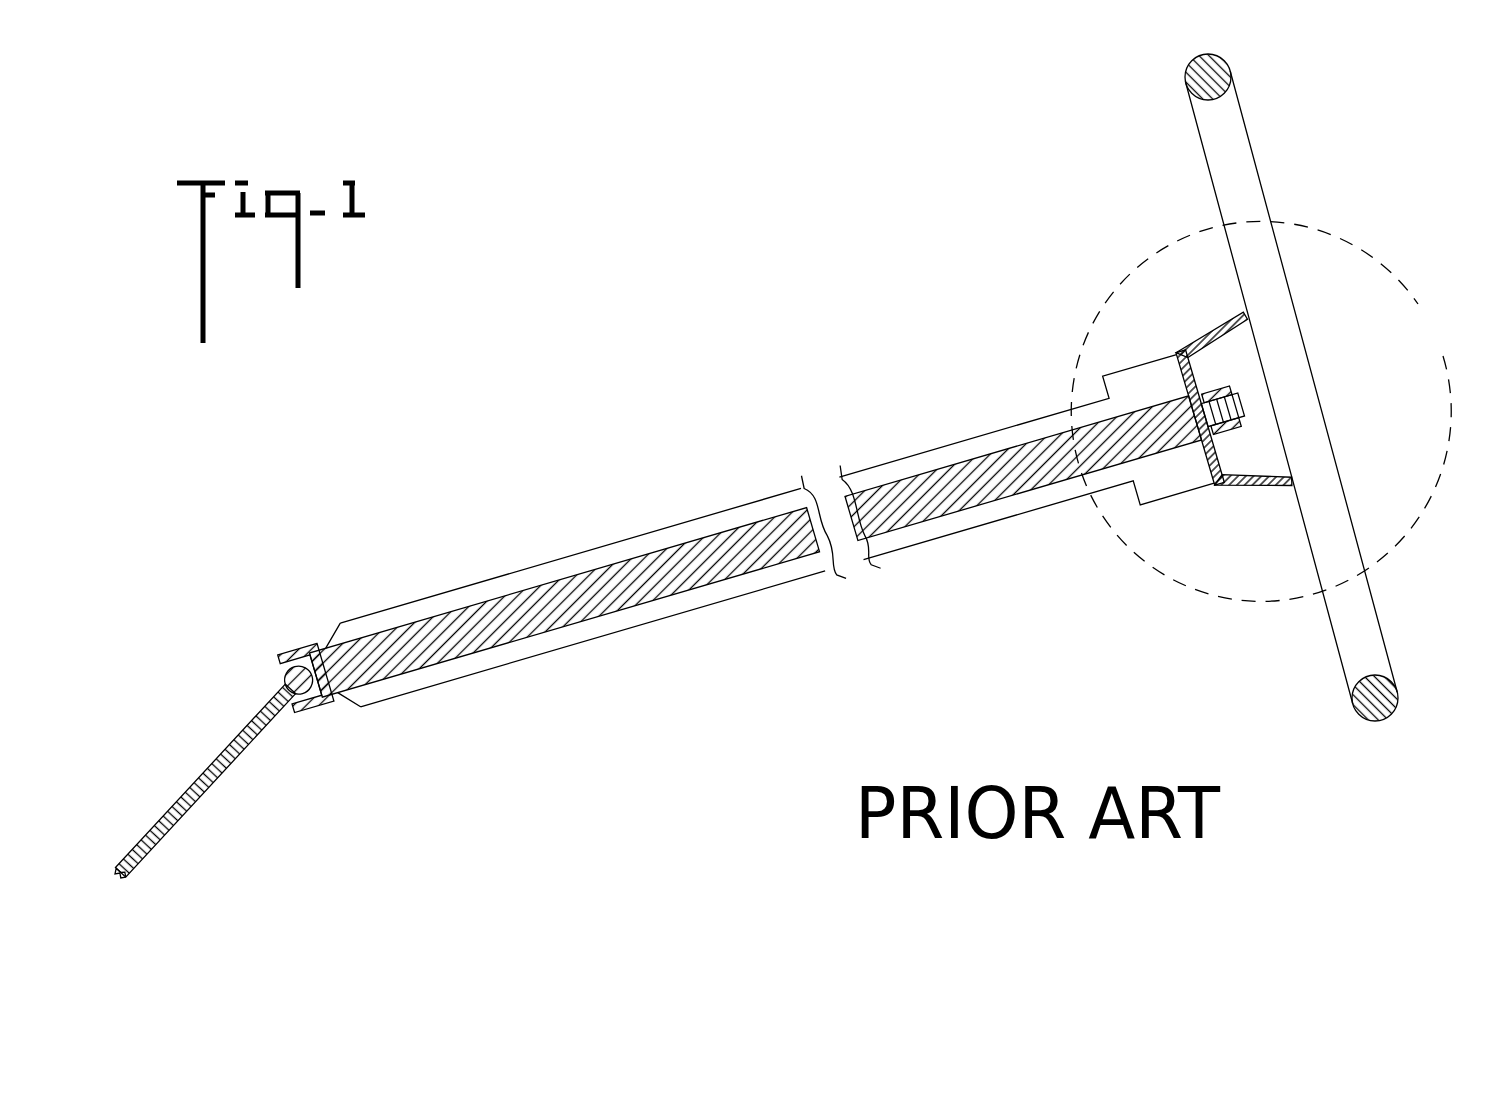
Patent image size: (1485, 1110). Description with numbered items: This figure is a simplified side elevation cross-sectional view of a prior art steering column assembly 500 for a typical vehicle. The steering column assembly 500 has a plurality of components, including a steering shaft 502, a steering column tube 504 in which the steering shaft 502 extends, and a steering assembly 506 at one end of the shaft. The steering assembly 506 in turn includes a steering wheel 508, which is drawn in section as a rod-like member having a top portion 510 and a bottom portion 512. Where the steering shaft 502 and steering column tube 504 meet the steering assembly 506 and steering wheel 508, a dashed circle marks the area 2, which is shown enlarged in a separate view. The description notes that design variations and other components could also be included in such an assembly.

The steering column assembly 500 is at (699, 390).
The steering shaft 502 is at (1050, 487).
The steering column tube 504 is at (983, 438).
The steering assembly 506 is at (1200, 315).
The steering wheel 508 is at (1323, 418).
The top portion 510 is at (1243, 115).
The bottom portion 512 is at (1392, 677).
The area 2 is at (1264, 411).